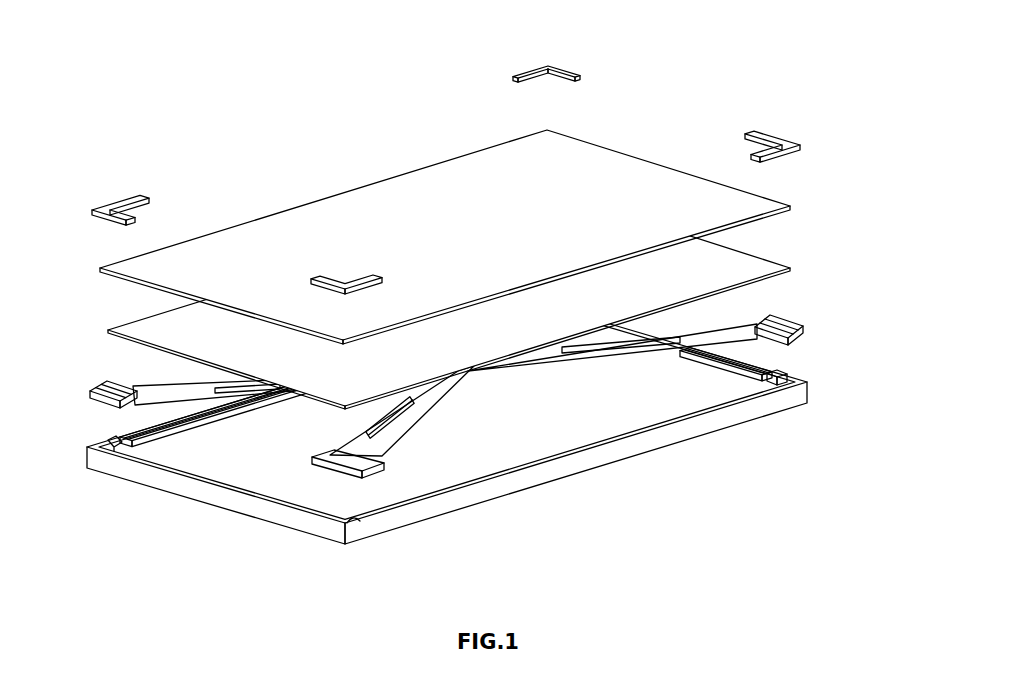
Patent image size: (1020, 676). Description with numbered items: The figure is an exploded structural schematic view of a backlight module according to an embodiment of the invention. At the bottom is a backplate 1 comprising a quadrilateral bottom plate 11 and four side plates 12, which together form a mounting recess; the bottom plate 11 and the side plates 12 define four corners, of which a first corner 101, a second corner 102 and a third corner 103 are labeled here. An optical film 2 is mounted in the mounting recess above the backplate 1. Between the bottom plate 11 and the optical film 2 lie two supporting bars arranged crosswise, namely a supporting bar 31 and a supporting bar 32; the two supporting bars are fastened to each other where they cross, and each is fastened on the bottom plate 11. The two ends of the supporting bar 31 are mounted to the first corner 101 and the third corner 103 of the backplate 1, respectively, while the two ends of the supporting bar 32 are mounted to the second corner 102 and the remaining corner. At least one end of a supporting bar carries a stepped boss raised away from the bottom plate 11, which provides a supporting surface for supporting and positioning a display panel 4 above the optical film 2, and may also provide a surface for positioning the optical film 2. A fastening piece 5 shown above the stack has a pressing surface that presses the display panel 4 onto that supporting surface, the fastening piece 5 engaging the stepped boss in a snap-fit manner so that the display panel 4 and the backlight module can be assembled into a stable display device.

The backplate 1 is at (462, 436).
The bottom plate 11 is at (443, 424).
The side plates 12 is at (213, 493).
The first corner 101 is at (113, 448).
The second corner 102 is at (353, 521).
The third corner 103 is at (793, 372).
The optical film 2 is at (697, 272).
The supporting bar 31 is at (705, 333).
The supporting bar 32 is at (372, 445).
The display panel 4 is at (613, 178).
The fastening piece 5 is at (578, 72).